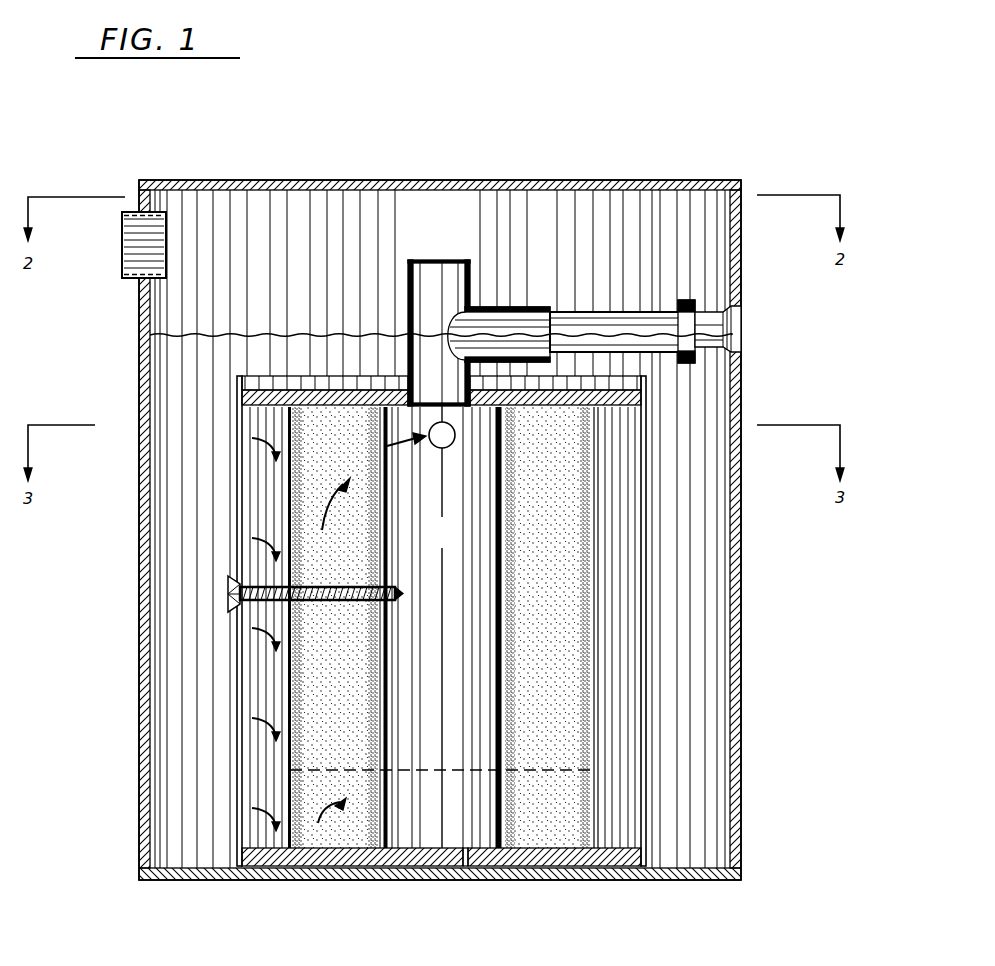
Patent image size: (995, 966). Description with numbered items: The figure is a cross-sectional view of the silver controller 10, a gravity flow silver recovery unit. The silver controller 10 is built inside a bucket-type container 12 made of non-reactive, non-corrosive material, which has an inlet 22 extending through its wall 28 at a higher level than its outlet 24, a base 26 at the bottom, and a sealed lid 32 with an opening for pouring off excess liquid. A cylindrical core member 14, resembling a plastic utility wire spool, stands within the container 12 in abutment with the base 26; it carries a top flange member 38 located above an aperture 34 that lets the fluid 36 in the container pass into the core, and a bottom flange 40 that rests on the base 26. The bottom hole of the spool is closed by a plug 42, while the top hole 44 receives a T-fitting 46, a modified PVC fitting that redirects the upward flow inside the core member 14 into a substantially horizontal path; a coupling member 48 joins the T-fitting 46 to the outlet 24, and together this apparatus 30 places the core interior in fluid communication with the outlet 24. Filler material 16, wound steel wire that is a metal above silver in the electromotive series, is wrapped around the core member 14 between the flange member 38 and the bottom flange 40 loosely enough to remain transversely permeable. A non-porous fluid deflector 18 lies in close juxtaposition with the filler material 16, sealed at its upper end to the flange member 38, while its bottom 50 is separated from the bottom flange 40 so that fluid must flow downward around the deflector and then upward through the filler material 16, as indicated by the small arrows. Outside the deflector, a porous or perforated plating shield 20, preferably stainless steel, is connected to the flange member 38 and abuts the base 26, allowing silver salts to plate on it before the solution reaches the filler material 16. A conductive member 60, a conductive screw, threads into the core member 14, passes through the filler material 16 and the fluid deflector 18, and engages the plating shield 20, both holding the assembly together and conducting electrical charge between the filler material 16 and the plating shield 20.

The silver controller 10 is at (683, 155).
The container 12 is at (743, 393).
The core member 14 is at (455, 543).
The filler material 16 is at (577, 635).
The fluid deflector 18 is at (600, 560).
The plating shield 20 is at (643, 735).
The inlet 22 is at (128, 255).
The outlet 24 is at (743, 328).
The base 26 is at (705, 870).
The wall 28 is at (139, 313).
The apparatus 30 is at (631, 306).
The sealed lid 32 is at (352, 180).
The aperture 34 is at (410, 398).
The fluid 36 is at (225, 335).
The flange member 38 is at (312, 397).
The bottom flange 40 is at (332, 858).
The plug 42 is at (445, 858).
The top hole 44 is at (433, 425).
The T-fitting 46 is at (468, 265).
The coupling member 48 is at (590, 308).
The bottom of fluid deflector 50 is at (307, 772).
The conductive member 60 is at (228, 585).